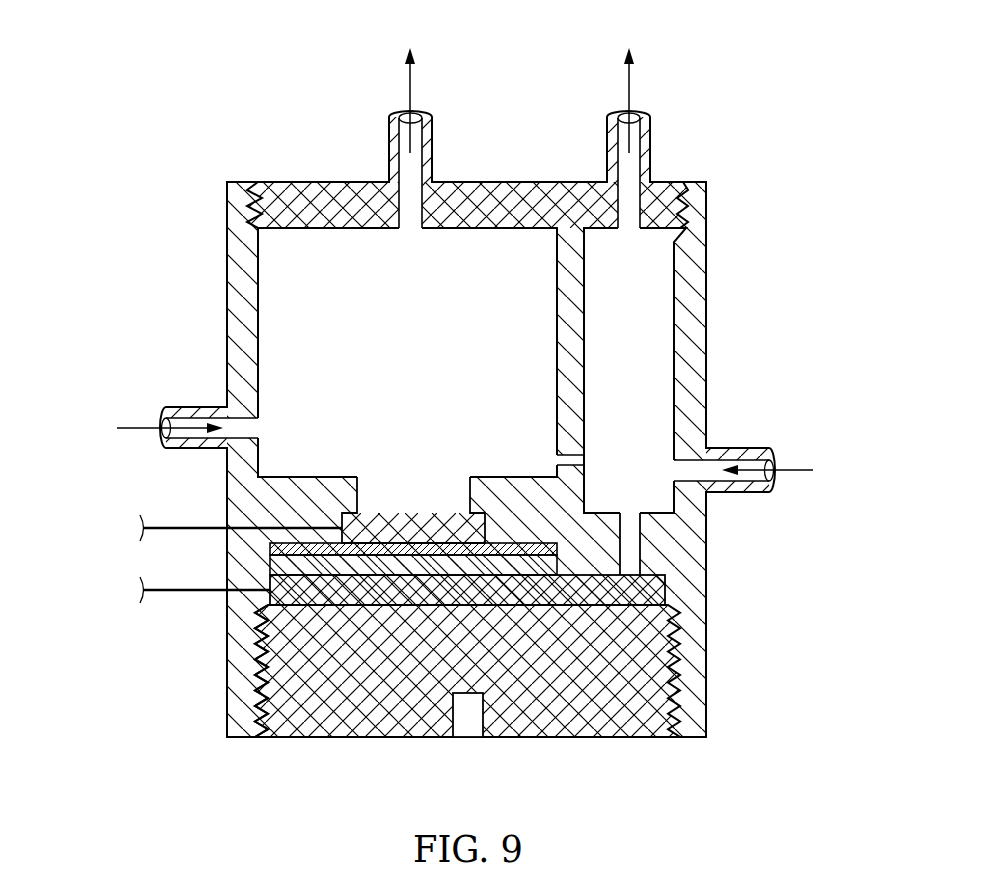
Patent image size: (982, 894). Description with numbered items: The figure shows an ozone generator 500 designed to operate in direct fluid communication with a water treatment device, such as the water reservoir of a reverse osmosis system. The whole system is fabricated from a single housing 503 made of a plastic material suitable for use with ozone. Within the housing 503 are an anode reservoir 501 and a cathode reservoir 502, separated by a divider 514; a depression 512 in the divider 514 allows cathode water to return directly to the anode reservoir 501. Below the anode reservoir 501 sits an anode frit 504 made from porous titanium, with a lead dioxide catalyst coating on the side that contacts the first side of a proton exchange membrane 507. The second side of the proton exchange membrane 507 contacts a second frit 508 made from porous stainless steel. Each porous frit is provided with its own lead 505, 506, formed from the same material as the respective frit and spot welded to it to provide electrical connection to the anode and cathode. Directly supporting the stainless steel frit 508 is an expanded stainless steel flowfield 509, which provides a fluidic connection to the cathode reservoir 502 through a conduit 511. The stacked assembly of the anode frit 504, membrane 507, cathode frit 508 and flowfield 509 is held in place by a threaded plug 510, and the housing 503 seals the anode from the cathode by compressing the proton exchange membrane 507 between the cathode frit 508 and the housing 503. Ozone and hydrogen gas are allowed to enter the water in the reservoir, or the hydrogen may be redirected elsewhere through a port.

The ozone generator 500 is at (773, 110).
The anode reservoir 501 is at (433, 366).
The cathode reservoir 502 is at (645, 366).
The housing 503 is at (228, 262).
The anode frit 504 is at (352, 520).
The lead 505 is at (140, 528).
The lead 506 is at (140, 590).
The proton exchange membrane 507 is at (275, 548).
The second frit 508 is at (302, 600).
The expanded stainless steel flowfield 509 is at (253, 668).
The threaded plug 510 is at (368, 738).
The conduit 511 is at (633, 548).
The depression 512 is at (558, 460).
The divider 514 is at (556, 415).